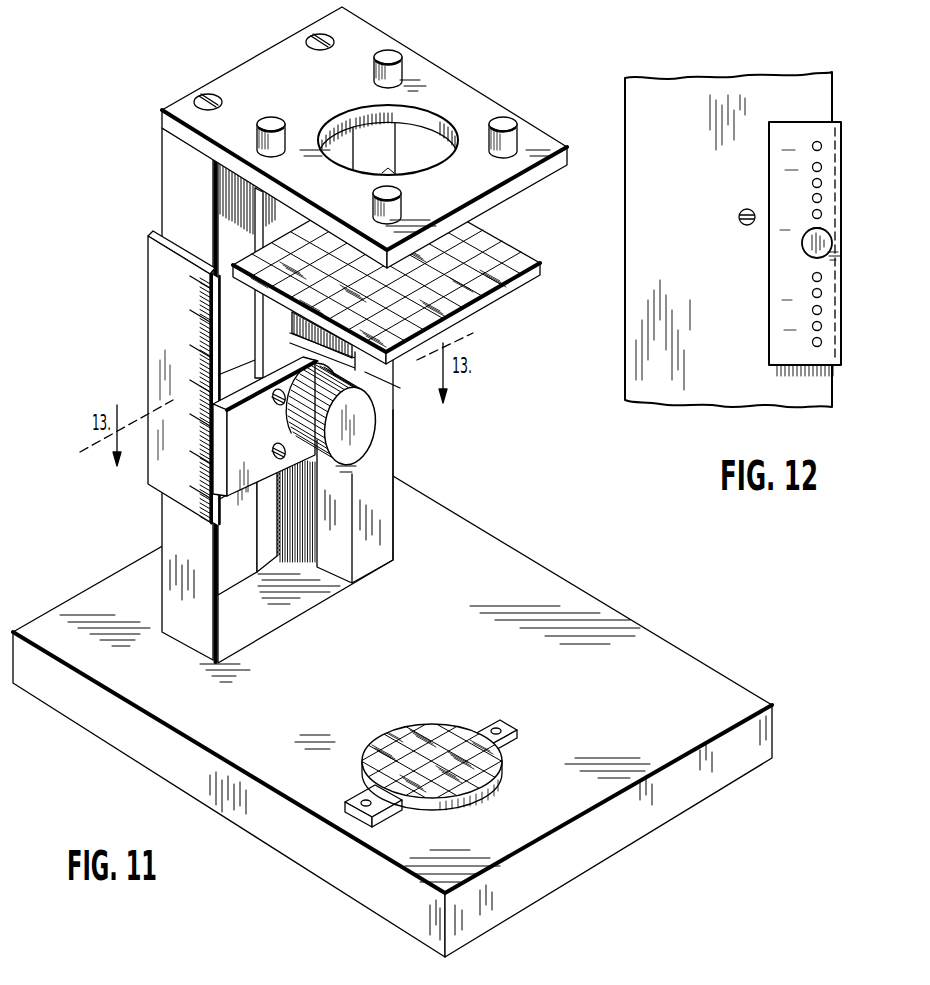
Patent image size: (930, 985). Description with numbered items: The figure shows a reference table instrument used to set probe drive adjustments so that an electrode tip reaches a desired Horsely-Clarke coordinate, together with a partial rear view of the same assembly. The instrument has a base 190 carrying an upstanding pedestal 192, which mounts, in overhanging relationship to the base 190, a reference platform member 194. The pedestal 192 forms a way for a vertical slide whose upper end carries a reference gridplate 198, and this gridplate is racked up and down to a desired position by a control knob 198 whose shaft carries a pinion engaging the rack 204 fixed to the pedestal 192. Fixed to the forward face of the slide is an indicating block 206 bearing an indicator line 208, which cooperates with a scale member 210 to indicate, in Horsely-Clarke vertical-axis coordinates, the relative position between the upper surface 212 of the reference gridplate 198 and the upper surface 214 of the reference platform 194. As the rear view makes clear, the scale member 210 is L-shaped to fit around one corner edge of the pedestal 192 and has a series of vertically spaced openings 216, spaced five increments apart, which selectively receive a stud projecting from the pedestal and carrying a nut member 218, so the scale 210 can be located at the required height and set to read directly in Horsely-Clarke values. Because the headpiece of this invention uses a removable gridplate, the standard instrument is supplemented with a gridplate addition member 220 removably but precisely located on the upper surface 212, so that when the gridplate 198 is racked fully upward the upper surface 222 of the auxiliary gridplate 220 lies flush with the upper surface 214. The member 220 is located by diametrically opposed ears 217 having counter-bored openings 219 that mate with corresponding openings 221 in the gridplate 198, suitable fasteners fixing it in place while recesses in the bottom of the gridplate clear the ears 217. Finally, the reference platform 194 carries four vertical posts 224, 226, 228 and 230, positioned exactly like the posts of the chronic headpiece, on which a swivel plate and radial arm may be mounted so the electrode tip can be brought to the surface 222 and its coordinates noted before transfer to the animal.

In FIG. 11, the base 190 is at (533, 578).
In FIG. 11, the pedestal 192 is at (385, 427).
In FIG. 12, the pedestal 192 is at (713, 98).
In FIG. 11, the reference platform member 194 is at (372, 135).
In FIG. 11, the reference gridplate 198 is at (358, 443).
In FIG. 11, the rack 204 is at (263, 550).
In FIG. 11, the indicating block 206 is at (245, 473).
In FIG. 11, the indicator line 208 is at (221, 458).
In FIG. 11, the scale member 210 is at (160, 303).
In FIG. 12, the scale member 210 is at (787, 134).
In FIG. 11, the upper surface of the reference gridplate 212 is at (497, 246).
In FIG. 11, the upper surface of the reference platform 214 is at (456, 106).
In FIG. 12, the openings 216 is at (822, 198).
In FIG. 11, the ears 217 is at (378, 808).
In FIG. 12, the nut member 218 is at (802, 252).
In FIG. 11, the counter-bored openings 219 is at (362, 800).
In FIG. 11, the gridplate addition member 220 is at (438, 761).
In FIG. 11, the openings in the reference gridplate 221 is at (340, 289).
In FIG. 11, the upper surface of the auxiliary gridplate 222 is at (410, 740).
In FIG. 11, the vertical post 224 is at (392, 54).
In FIG. 11, the vertical post 226 is at (511, 122).
In FIG. 11, the vertical post 228 is at (390, 194).
In FIG. 11, the vertical post 230 is at (277, 123).